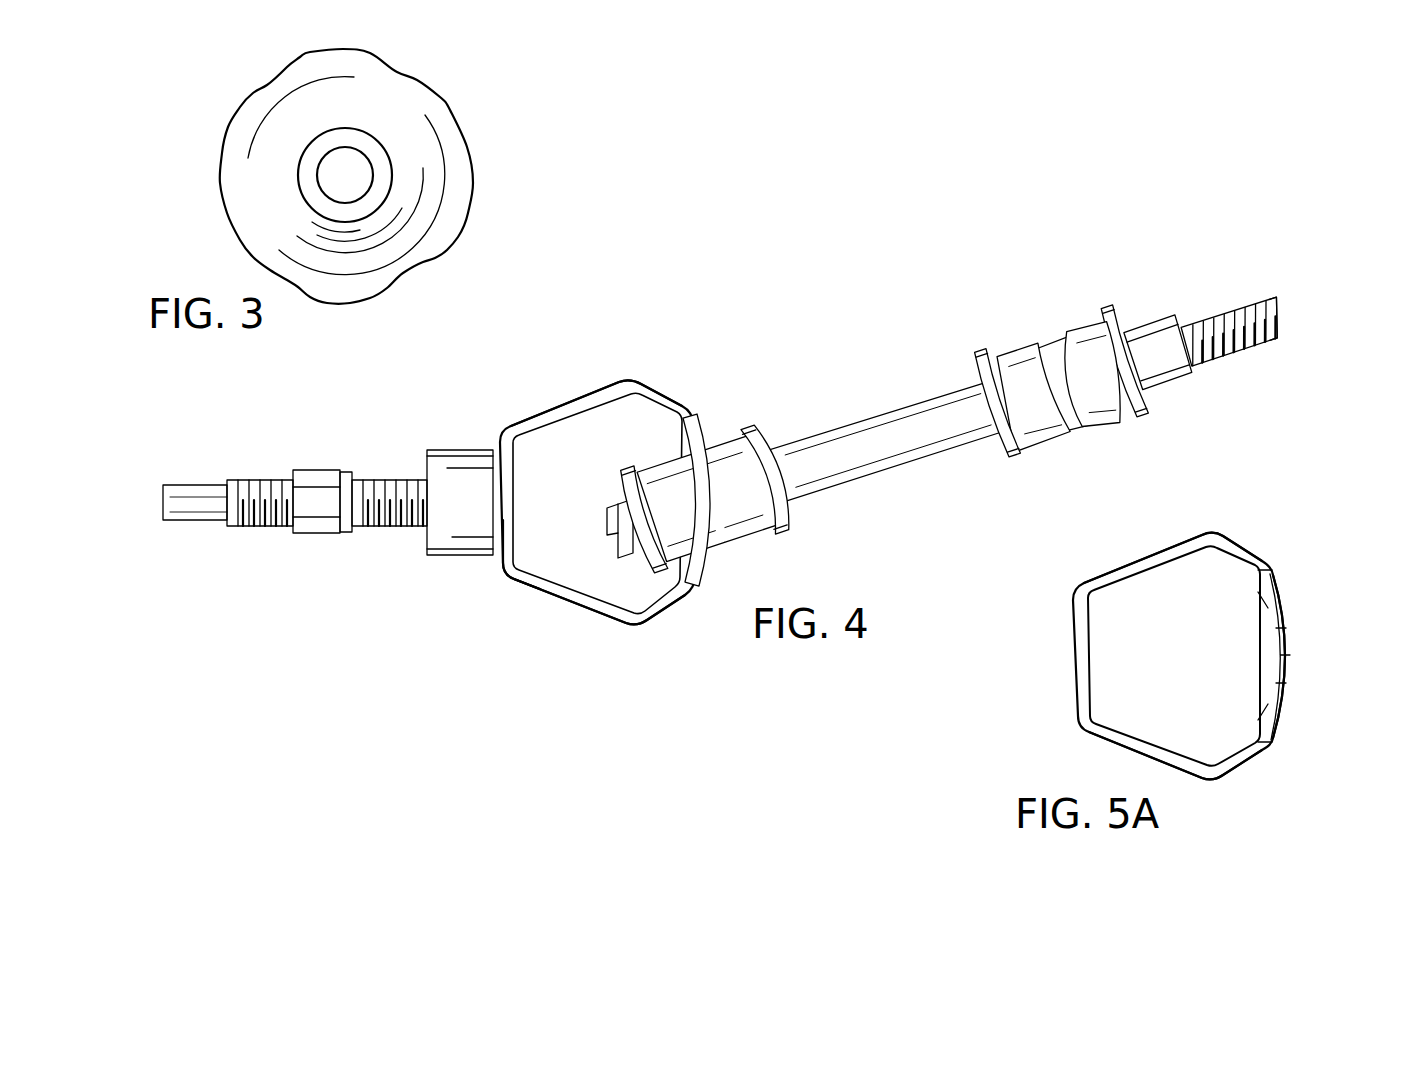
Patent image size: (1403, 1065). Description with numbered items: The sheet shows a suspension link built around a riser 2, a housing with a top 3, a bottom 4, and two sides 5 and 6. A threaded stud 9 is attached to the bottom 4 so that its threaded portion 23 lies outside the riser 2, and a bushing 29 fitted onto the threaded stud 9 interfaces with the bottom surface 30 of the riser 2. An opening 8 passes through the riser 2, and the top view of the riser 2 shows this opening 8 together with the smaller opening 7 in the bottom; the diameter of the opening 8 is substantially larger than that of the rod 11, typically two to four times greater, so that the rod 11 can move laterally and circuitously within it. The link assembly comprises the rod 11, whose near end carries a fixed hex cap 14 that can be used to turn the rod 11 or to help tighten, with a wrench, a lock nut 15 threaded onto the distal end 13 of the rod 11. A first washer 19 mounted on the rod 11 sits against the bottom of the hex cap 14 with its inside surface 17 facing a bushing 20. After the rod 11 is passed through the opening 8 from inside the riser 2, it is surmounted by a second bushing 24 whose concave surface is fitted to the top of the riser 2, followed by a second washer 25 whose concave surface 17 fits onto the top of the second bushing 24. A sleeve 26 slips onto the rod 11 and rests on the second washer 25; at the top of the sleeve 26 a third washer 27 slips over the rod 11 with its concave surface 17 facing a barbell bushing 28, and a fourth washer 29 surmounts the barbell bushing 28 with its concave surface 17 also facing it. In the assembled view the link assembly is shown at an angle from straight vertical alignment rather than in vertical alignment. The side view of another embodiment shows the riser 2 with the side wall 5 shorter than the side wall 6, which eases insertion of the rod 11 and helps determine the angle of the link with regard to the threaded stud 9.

In FIG. 3, the riser 2 is at (505, 122).
In FIG. 4, the riser 2 is at (743, 466).
In FIG. 5A, the top 3 is at (1285, 600).
In FIG. 4, the bottom 4 is at (497, 440).
In FIG. 5A, the bottom 4 is at (1072, 636).
In FIG. 4, the side 5 is at (592, 394).
In FIG. 5A, the side 5 is at (1233, 537).
In FIG. 4, the side 6 is at (560, 599).
In FIG. 5A, the side 6 is at (1240, 770).
In FIG. 3, the central bore 7 is at (350, 162).
In FIG. 3, the opening 8 is at (378, 192).
In FIG. 5A, the opening 8 is at (1290, 660).
In FIG. 4, the threaded stud 9 is at (263, 495).
In FIG. 4, the rod 11 is at (1205, 315).
In FIG. 4, the distal end 13 is at (1278, 316).
In FIG. 4, the fixed hex cap 14 is at (612, 532).
In FIG. 4, the lock nut 15 is at (1172, 382).
In FIG. 4, the inside surface 17 is at (1125, 395).
In FIG. 4, the first washer 19 is at (627, 467).
In FIG. 4, the bushing 20 is at (646, 521).
In FIG. 4, the threaded portion 23 is at (378, 468).
In FIG. 4, the second bushing 24 is at (723, 499).
In FIG. 4, the second washer 25 is at (787, 513).
In FIG. 4, the sleeve 26 is at (860, 425).
In FIG. 4, the third washer 27 is at (985, 353).
In FIG. 4, the barbell bushing 28 is at (1077, 330).
In FIG. 4, the fourth washer 29 is at (436, 508).
In FIG. 4, the bottom surface 30 is at (492, 567).